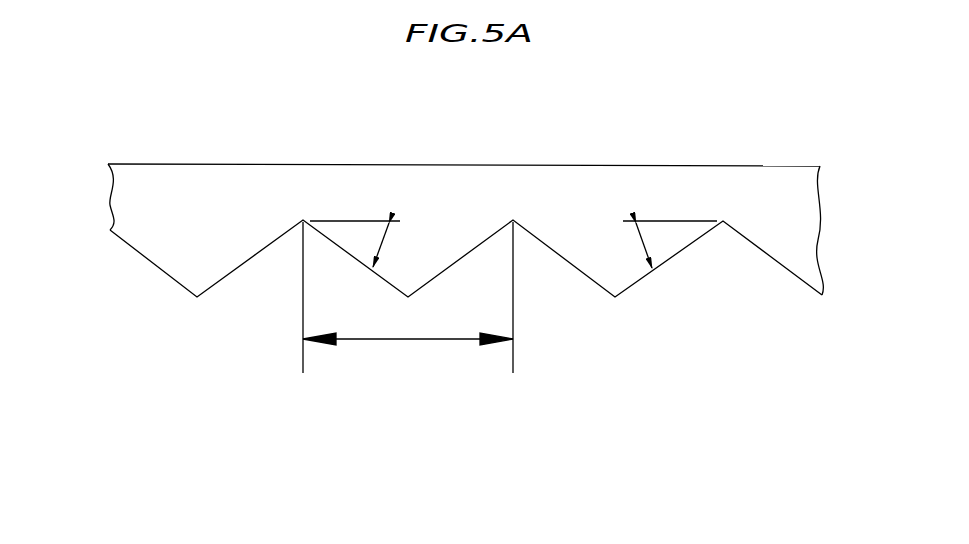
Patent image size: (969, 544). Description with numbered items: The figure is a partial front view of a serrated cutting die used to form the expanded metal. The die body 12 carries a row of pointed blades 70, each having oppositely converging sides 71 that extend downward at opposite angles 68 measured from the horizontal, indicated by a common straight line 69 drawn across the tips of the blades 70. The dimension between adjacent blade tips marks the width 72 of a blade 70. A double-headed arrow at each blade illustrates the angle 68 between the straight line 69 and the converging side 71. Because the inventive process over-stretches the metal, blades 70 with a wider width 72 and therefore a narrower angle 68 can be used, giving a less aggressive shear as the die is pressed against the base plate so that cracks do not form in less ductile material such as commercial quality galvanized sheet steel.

The substrate 12 is at (170, 191).
The blade angle 68 is at (387, 247).
The common straight line 69 is at (358, 218).
The blade 70 is at (177, 239).
The converging side 71 is at (177, 287).
The blade width 72 is at (407, 340).